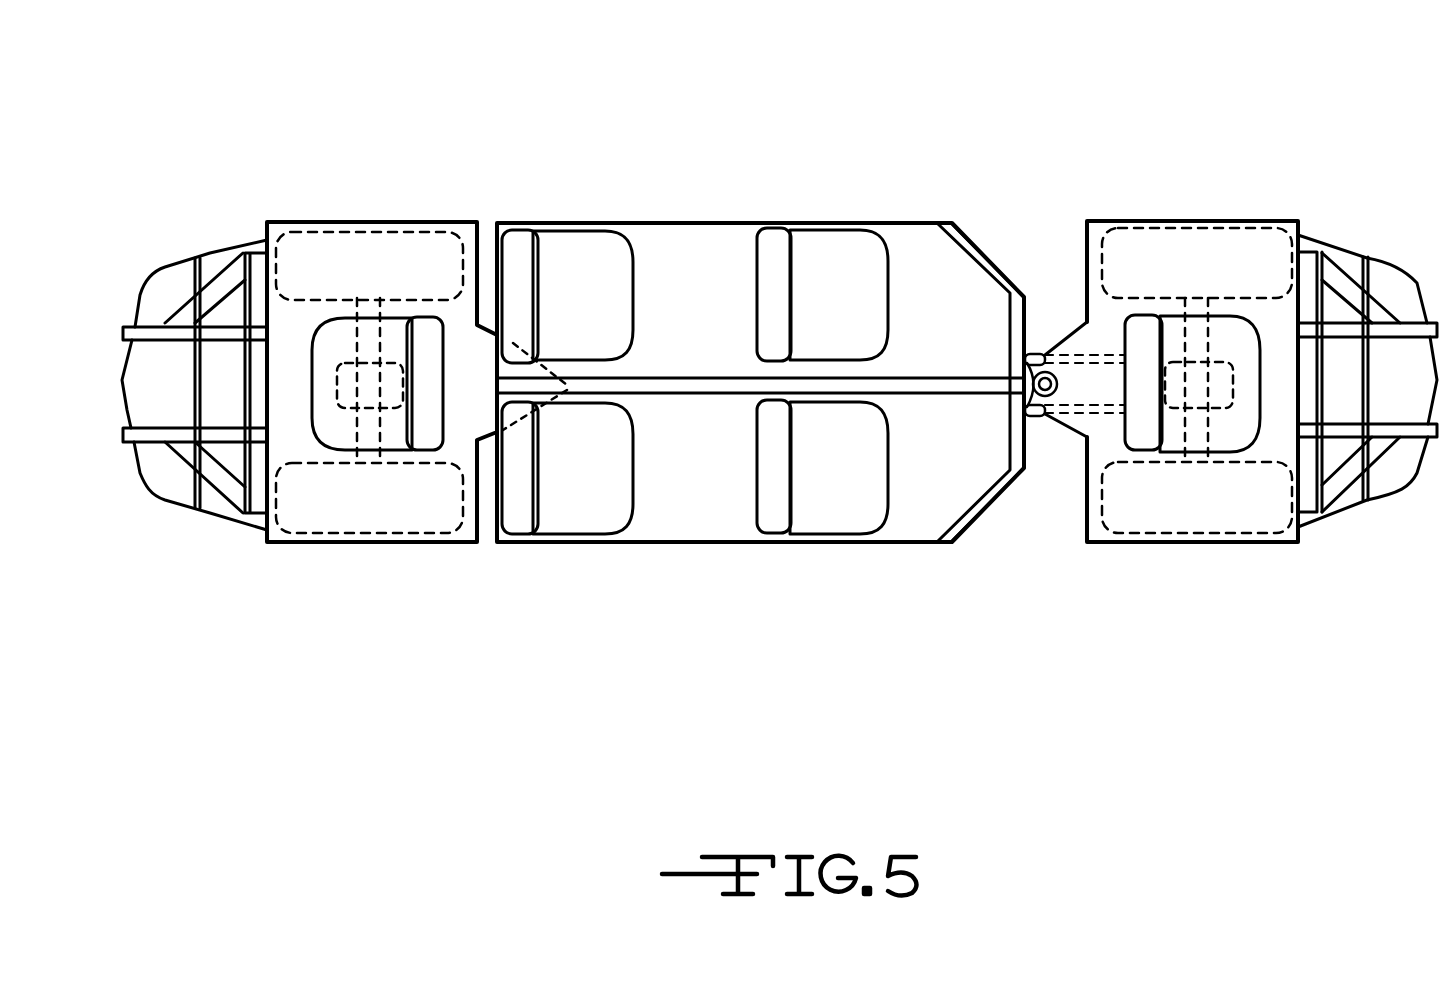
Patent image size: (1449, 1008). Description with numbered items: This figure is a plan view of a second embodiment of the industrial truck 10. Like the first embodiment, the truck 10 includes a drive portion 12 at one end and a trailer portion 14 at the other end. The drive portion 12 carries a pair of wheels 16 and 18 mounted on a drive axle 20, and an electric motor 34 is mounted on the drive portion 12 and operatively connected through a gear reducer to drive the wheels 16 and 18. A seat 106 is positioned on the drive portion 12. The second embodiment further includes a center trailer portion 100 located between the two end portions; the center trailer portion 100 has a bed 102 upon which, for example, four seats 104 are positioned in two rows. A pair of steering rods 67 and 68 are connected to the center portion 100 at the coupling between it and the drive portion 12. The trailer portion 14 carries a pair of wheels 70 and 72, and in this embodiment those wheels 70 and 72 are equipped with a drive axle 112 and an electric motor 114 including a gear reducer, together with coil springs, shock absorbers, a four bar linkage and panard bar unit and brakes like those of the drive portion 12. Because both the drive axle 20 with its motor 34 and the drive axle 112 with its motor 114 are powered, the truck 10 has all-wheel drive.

The industrial truck 10 is at (966, 123).
The drive portion 12 is at (1347, 262).
The trailer portion 14 is at (313, 221).
The wheel 16 is at (1170, 219).
The wheel 18 is at (1222, 534).
The drive axle 20 is at (1210, 347).
The electric motor 34 is at (1213, 397).
The steering rod 67 is at (1082, 355).
The steering rod 68 is at (1082, 416).
The wheel 70 is at (403, 232).
The wheel 72 is at (362, 534).
The center trailer portion 100 is at (863, 222).
The bed 102 is at (946, 260).
The seats 104 is at (600, 286).
The seat 106 is at (427, 385).
The drive axle 112 is at (345, 462).
The electric motor 114 is at (320, 360).